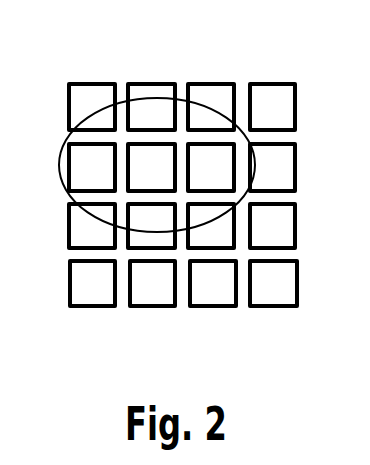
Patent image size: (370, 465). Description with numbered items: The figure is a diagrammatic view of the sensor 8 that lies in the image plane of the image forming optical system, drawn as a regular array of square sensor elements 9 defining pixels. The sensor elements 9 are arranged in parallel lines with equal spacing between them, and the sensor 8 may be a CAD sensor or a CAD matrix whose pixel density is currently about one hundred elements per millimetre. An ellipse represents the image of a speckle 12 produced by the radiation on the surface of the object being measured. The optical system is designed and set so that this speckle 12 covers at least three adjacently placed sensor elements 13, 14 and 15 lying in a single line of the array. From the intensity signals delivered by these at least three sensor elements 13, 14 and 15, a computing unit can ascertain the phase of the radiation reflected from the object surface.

The sensor 8 is at (182, 187).
The sensor elements 9 is at (182, 187).
The speckle 12 is at (58, 157).
The sensor element 13 is at (97, 152).
The sensor element 14 is at (155, 155).
The sensor element 15 is at (212, 153).